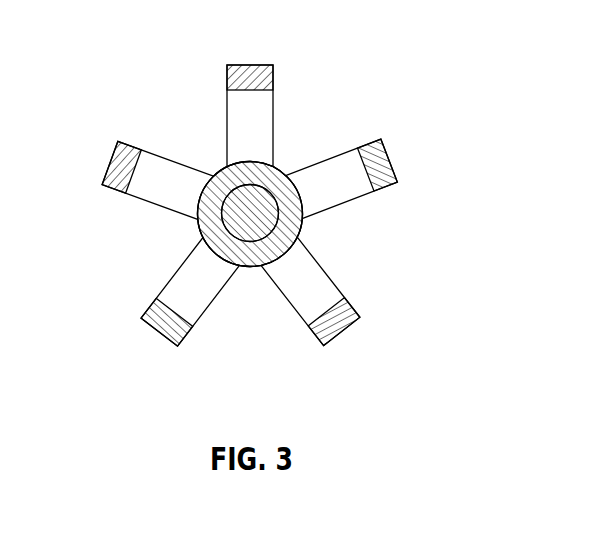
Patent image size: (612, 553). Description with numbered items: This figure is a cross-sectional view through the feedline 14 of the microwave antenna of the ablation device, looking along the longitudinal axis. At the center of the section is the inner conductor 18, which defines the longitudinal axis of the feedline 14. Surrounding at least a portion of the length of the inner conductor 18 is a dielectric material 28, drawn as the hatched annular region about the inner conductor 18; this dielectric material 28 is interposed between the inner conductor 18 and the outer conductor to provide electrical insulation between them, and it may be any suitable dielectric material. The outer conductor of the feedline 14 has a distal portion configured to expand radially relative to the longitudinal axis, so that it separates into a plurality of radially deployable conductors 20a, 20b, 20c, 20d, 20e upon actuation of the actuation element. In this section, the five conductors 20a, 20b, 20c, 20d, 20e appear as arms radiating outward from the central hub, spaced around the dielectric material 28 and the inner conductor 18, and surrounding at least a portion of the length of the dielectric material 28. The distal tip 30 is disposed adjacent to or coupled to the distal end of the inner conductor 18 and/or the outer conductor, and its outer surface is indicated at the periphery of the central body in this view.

The feedline 14 is at (398, 78).
The inner conductor 18 is at (263, 215).
The radially deployable conductor 20a is at (257, 73).
The radially deployable conductor 20b is at (380, 163).
The radially deployable conductor 20c is at (337, 325).
The radially deployable conductor 20d is at (152, 322).
The radially deployable conductor 20e is at (118, 167).
The dielectric material 28 is at (250, 265).
The distal tip 30 is at (278, 168).